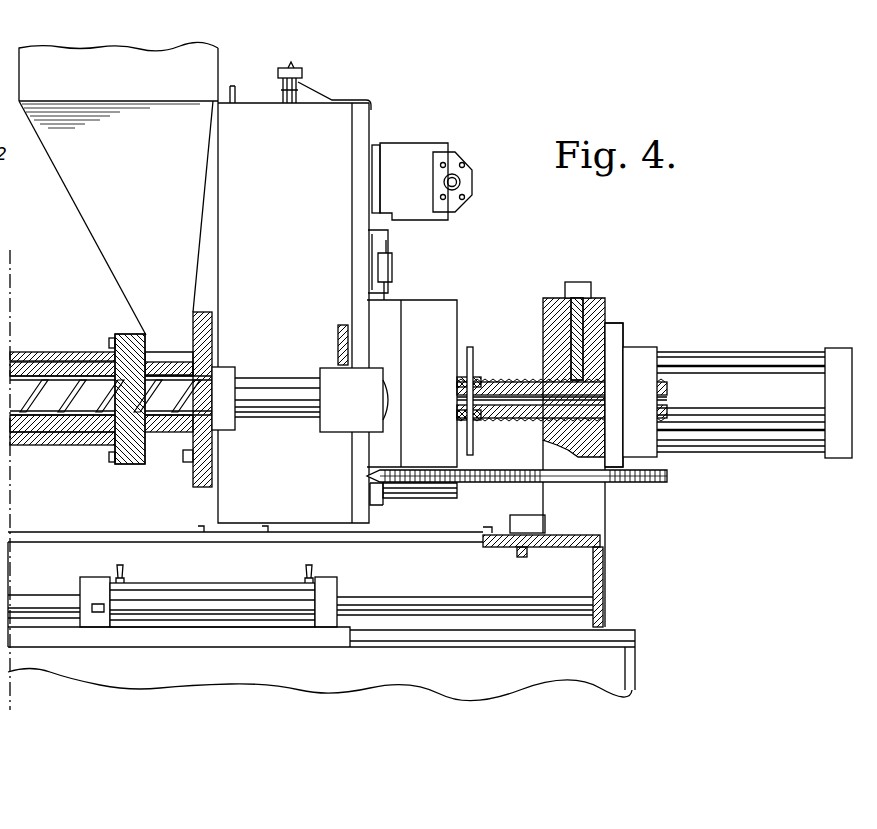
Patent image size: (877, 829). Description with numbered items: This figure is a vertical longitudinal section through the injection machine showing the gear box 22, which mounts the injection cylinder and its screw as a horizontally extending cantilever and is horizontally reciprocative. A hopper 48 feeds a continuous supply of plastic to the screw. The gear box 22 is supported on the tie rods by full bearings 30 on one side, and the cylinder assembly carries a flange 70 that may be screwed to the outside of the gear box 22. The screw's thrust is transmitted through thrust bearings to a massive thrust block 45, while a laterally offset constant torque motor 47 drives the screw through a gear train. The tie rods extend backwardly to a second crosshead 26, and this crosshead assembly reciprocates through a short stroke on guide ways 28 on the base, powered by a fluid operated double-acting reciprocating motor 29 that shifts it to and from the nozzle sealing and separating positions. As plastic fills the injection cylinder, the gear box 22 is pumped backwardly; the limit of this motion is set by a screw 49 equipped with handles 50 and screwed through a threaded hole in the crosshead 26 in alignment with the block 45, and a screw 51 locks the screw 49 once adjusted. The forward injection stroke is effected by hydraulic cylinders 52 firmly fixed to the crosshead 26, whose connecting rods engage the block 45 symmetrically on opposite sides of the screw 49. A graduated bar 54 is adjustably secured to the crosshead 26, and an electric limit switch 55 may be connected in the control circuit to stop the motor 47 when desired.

The gear box 22 is at (292, 241).
The second crosshead 26 is at (606, 308).
The guide ways 28 is at (618, 630).
The fluid operated double-acting reciprocating motor 29 is at (185, 592).
The full bearings 30 is at (325, 370).
The thrust block 45 is at (455, 302).
The constant torque motor 47 is at (418, 189).
The hopper 48 is at (150, 194).
The screw 49 is at (513, 382).
The handles 50 is at (476, 350).
The screw 51 is at (604, 298).
The hydraulic cylinders 52 is at (750, 406).
The graduated bar 54 is at (628, 483).
The electric limit switch 55 is at (380, 500).
The flanges 70 is at (193, 480).